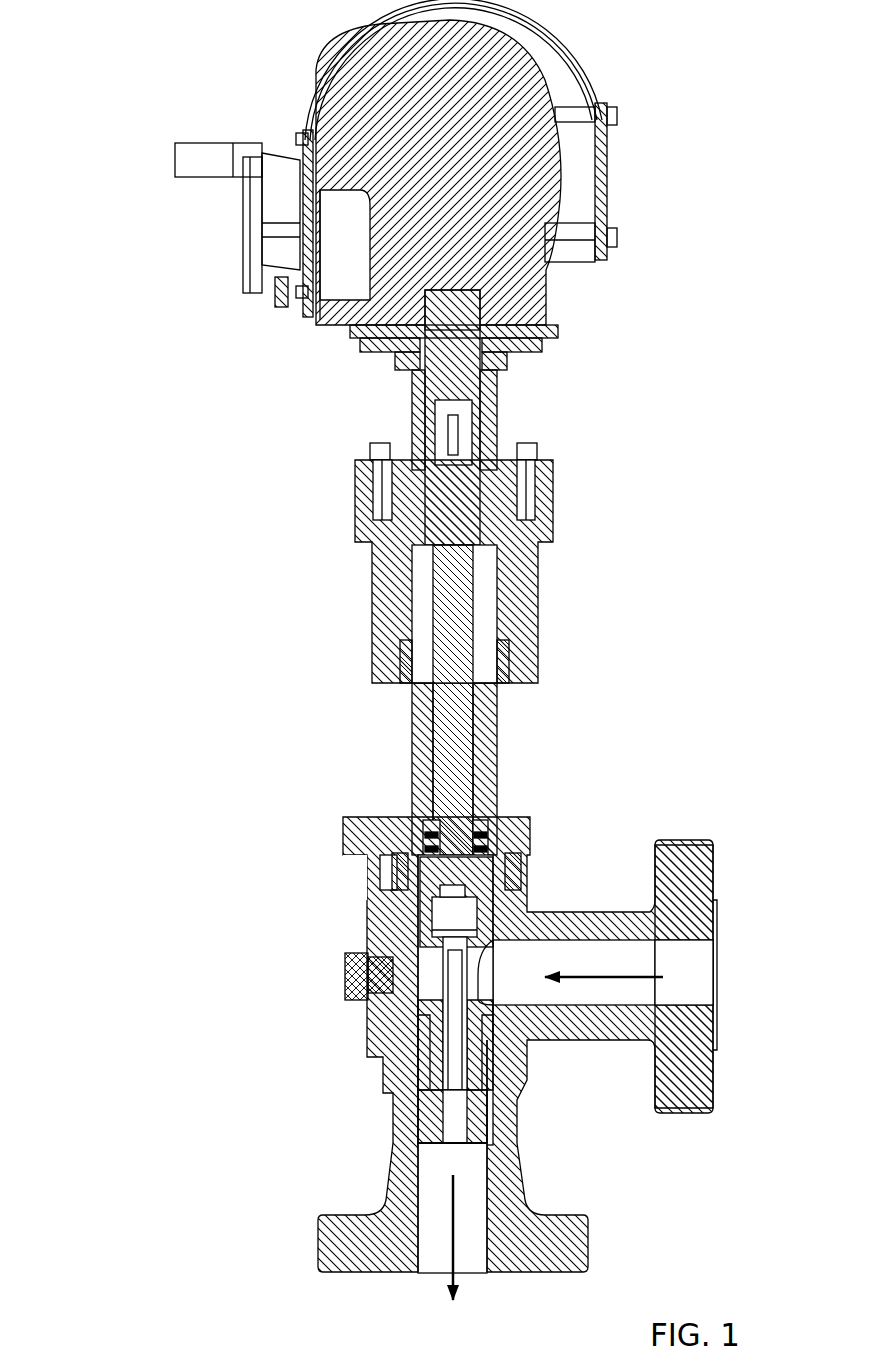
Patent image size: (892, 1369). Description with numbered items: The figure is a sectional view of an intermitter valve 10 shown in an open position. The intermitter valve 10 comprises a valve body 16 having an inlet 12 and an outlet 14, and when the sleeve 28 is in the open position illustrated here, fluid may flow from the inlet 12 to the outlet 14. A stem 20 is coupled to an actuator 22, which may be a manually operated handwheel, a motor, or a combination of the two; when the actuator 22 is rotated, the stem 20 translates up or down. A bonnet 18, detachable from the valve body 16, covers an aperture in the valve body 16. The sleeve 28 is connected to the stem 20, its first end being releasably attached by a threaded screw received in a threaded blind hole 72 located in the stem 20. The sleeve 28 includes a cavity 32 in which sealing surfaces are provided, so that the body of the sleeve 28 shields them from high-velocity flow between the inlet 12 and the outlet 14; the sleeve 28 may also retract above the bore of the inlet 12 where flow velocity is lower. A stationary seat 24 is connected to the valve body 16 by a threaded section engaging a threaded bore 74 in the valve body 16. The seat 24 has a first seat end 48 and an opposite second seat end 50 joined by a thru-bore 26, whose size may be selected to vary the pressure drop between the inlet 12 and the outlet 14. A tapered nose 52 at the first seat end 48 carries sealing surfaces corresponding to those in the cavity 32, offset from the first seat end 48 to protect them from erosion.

The intermitter valve 10 is at (238, 582).
The inlet 12 is at (677, 983).
The outlet 14 is at (467, 1223).
The valve body 16 is at (400, 1092).
The bonnet 18 is at (507, 848).
The stem 20 is at (462, 750).
The actuator 22 is at (443, 398).
The seat 24 is at (430, 1053).
The thru-bore 26 is at (457, 1073).
The sleeve 28 is at (427, 873).
The cavity 32 is at (447, 923).
The first seat end 48 is at (440, 970).
The second seat end 50 is at (440, 1143).
The tapered nose 52 is at (477, 983).
The threaded blind hole 72 is at (463, 810).
The threaded bore 74 is at (487, 1038).